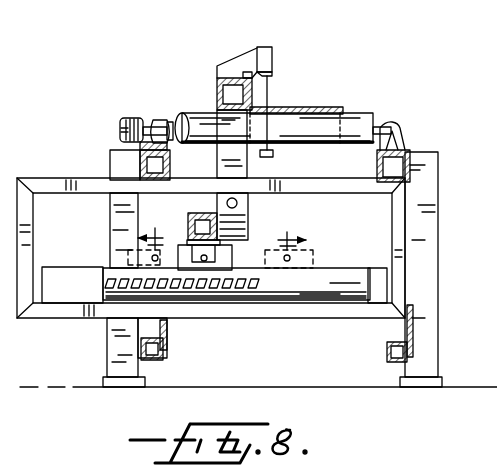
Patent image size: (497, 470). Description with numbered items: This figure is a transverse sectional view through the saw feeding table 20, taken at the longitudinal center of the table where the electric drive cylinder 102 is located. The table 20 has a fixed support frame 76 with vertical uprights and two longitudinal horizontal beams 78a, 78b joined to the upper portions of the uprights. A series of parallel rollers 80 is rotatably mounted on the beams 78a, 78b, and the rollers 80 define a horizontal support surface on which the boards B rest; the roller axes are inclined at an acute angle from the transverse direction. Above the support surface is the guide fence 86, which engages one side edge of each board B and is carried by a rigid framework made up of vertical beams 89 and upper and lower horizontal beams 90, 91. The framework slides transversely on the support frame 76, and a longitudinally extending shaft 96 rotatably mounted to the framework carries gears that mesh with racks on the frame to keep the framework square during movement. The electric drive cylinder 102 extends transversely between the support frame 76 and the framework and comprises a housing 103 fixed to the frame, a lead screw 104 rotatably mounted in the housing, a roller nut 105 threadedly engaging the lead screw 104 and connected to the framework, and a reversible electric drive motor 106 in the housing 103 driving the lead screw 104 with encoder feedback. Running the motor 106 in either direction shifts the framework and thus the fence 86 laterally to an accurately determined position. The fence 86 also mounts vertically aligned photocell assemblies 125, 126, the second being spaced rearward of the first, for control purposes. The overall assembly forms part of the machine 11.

The machine 11 is at (257, 282).
The saw feeding table 20 is at (182, 105).
The fixed support frame 76 is at (443, 165).
The horizontal beam 78a is at (140, 163).
The horizontal beam 78b is at (402, 150).
The rollers 80 is at (366, 118).
The guide fence 86 is at (252, 90).
The vertical beams 89 is at (273, 156).
The upper horizontal beam 90 is at (217, 90).
The lower horizontal beam 91 is at (188, 226).
The shaft 96 is at (240, 205).
The electric drive cylinder 102 is at (245, 281).
The housing 103 is at (330, 290).
The lead screw 104 is at (258, 285).
The roller nut 105 is at (205, 283).
The reversible electric drive motor 106 is at (73, 267).
The photocell assembly 125 is at (317, 42).
The second photocell assembly 126 is at (272, 62).
The boards B is at (320, 107).